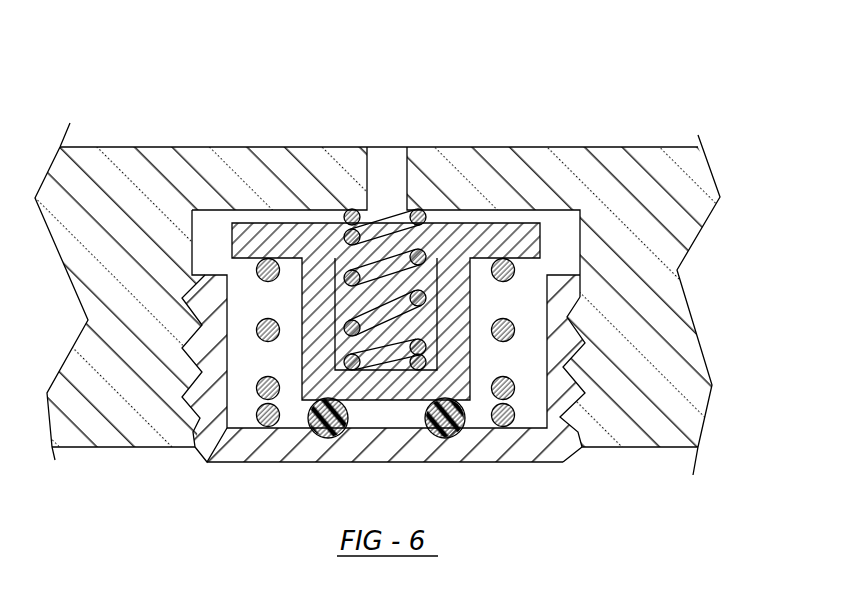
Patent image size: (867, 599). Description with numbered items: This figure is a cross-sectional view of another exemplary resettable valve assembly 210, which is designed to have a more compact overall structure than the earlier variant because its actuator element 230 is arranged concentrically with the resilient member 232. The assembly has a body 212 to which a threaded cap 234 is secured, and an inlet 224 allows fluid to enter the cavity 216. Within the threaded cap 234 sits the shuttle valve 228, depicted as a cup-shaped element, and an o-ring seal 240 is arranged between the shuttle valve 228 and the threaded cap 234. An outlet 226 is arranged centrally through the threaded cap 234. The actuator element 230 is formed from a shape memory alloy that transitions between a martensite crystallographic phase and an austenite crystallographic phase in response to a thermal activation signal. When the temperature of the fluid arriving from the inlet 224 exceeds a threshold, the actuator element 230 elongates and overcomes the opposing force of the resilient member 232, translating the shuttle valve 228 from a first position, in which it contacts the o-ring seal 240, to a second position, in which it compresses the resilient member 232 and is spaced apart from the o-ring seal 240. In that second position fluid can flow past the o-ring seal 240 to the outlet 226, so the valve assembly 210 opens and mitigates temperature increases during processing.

The resettable valve assembly 210 is at (140, 68).
The body 212 is at (95, 422).
The cavity 216 is at (192, 248).
The inlet 224 is at (417, 212).
The outlet 226 is at (395, 463).
The shuttle valve 228 is at (513, 233).
The actuator element 230 is at (513, 328).
The resilient member 232 is at (350, 208).
The threaded cap 234 is at (230, 463).
The o-ring seal 240 is at (328, 438).